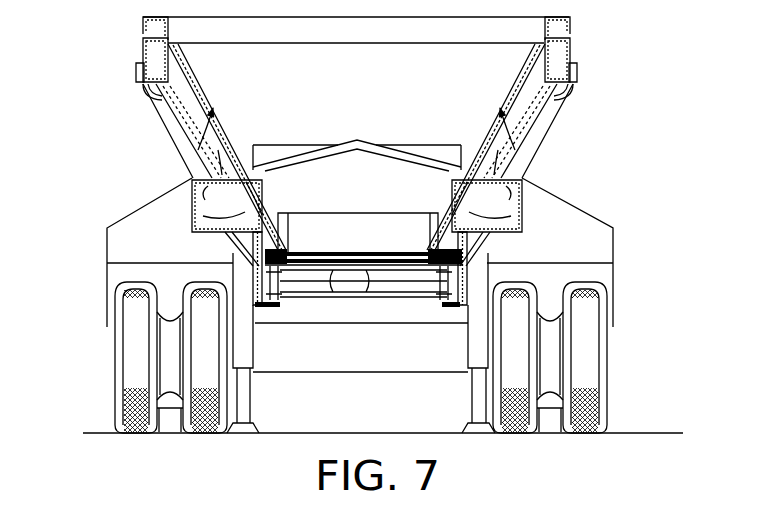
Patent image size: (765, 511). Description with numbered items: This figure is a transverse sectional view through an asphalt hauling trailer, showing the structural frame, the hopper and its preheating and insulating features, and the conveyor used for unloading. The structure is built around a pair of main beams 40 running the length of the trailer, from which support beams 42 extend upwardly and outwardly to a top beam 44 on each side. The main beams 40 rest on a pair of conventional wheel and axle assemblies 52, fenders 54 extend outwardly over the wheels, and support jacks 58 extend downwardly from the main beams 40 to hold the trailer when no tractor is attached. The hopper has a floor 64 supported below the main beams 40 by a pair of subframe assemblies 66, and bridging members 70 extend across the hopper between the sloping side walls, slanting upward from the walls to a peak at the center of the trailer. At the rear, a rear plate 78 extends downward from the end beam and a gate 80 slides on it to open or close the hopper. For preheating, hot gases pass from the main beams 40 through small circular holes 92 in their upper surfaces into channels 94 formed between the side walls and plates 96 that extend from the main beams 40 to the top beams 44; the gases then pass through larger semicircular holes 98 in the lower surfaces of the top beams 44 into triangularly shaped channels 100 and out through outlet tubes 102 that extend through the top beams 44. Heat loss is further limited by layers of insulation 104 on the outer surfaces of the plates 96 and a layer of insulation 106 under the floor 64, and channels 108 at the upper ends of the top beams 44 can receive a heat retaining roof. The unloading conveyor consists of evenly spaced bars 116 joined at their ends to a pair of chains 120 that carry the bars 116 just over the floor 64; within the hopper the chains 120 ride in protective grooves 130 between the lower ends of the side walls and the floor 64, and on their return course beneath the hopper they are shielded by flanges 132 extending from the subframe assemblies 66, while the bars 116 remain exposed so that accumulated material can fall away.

The channels 108 is at (140, 28).
The top beam 44 is at (142, 49).
The outlet tubes 102 is at (136, 68).
The triangularly shaped channels 100 is at (175, 68).
The semicircularly shaped holes 98 is at (190, 89).
The plates 96 is at (170, 104).
The support beams 42 is at (172, 120).
The channels 94 is at (213, 147).
The layers of insulation 104 is at (205, 167).
The main beams 40 is at (192, 216).
The holes 92 is at (357, 200).
The fenders 54 is at (118, 248).
The subframe assemblies 66 is at (230, 250).
The flanges 132 is at (263, 308).
The support jacks 58 is at (246, 348).
The wheel and axle assemblies 52 is at (172, 436).
The rear plate 78 is at (367, 95).
The gate 80 is at (365, 196).
The bridging members 70 is at (344, 141).
The floor 64 is at (350, 258).
The grooves 130 is at (428, 252).
The bars 116 is at (329, 258).
The layer of insulation 106 is at (368, 272).
The chains 120 is at (278, 304).